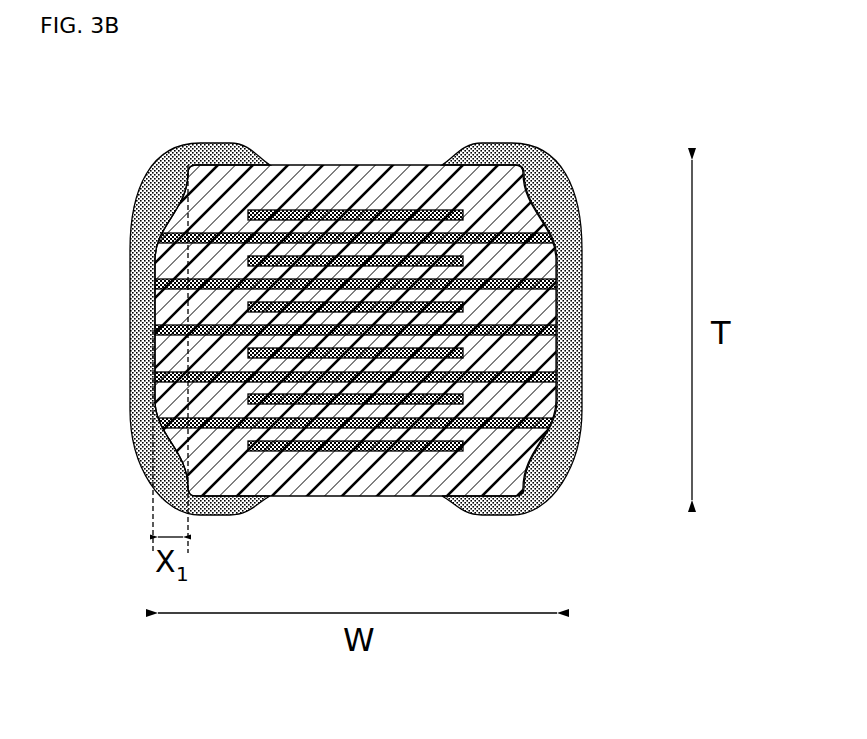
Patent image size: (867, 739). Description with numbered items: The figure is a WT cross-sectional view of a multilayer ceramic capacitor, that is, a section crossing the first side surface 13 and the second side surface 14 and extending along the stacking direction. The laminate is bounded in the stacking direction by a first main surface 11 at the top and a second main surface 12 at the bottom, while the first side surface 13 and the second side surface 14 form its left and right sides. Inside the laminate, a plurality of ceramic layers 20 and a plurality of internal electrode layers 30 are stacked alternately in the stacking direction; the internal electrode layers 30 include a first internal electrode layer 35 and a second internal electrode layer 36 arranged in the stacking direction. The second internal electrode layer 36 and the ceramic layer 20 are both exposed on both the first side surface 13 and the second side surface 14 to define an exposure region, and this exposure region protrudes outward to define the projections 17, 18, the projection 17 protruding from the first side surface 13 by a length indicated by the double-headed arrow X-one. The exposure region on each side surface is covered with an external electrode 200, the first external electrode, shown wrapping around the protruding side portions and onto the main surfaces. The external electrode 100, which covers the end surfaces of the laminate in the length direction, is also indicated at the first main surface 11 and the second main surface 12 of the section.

The external electrode 200 is at (162, 144).
The external electrode 100 is at (388, 160).
The first main surface 11 is at (333, 162).
The second main surface 12 is at (283, 497).
The first side surface 13 is at (185, 183).
The second side surface 14 is at (527, 188).
The projection 17 is at (165, 416).
The projection 18 is at (547, 416).
The ceramic layer 20 is at (433, 225).
The internal electrode layer 30 is at (356, 318).
The first internal electrode layer 35 is at (378, 449).
The second internal electrode layer 36 is at (450, 422).